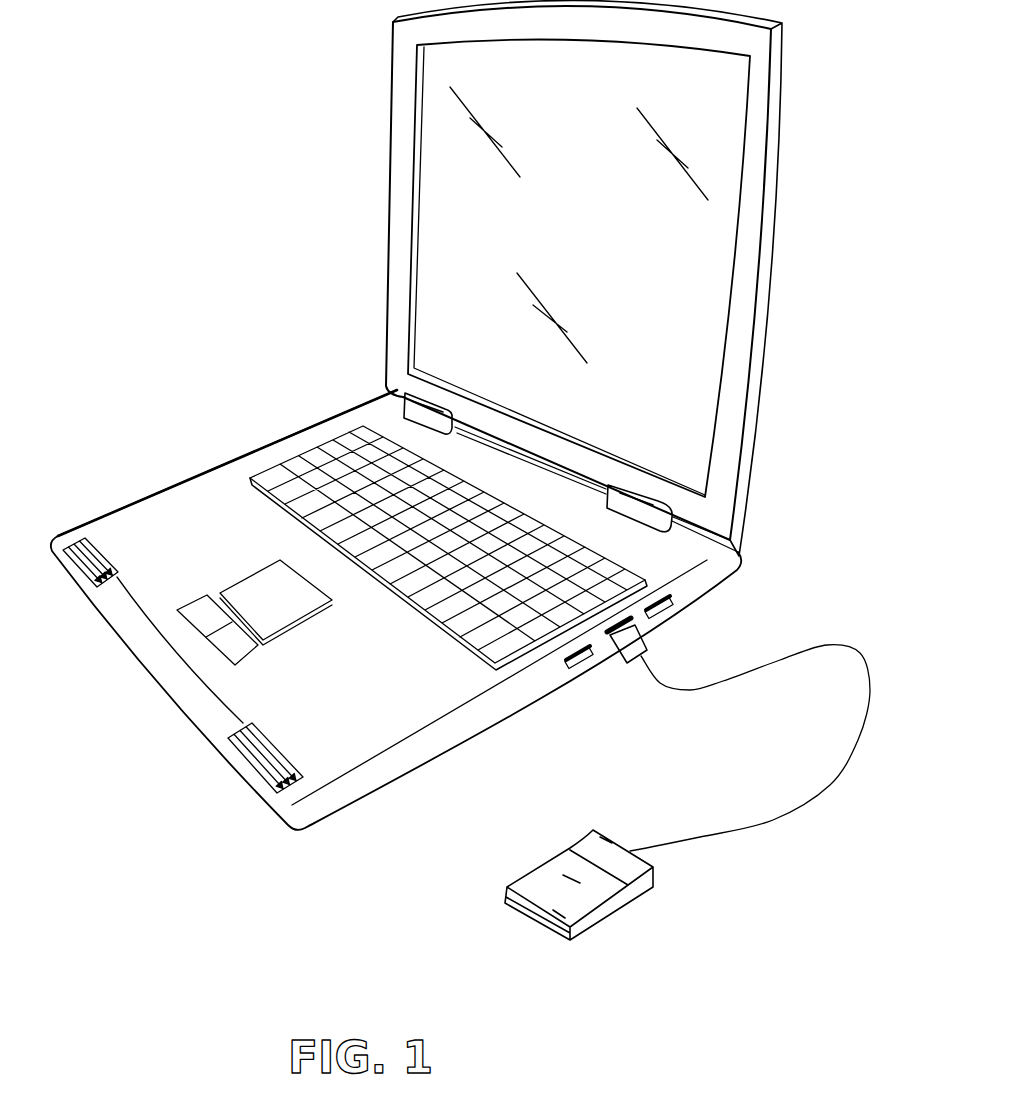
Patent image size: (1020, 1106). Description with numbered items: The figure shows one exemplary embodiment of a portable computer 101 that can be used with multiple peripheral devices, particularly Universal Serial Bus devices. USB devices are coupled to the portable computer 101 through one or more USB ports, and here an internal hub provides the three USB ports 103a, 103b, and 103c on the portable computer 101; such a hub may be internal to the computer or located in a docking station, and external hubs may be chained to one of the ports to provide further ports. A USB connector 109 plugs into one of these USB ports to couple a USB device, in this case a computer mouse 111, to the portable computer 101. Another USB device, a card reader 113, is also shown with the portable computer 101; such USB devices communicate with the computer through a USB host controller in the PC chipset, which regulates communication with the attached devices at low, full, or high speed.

The portable computer 101 is at (416, 415).
The USB port 103a is at (567, 669).
The USB port 103b is at (610, 652).
The USB port 103c is at (673, 602).
The USB connector 109 is at (648, 647).
The computer mouse 111 is at (603, 890).
The card reader 113 is at (433, 743).